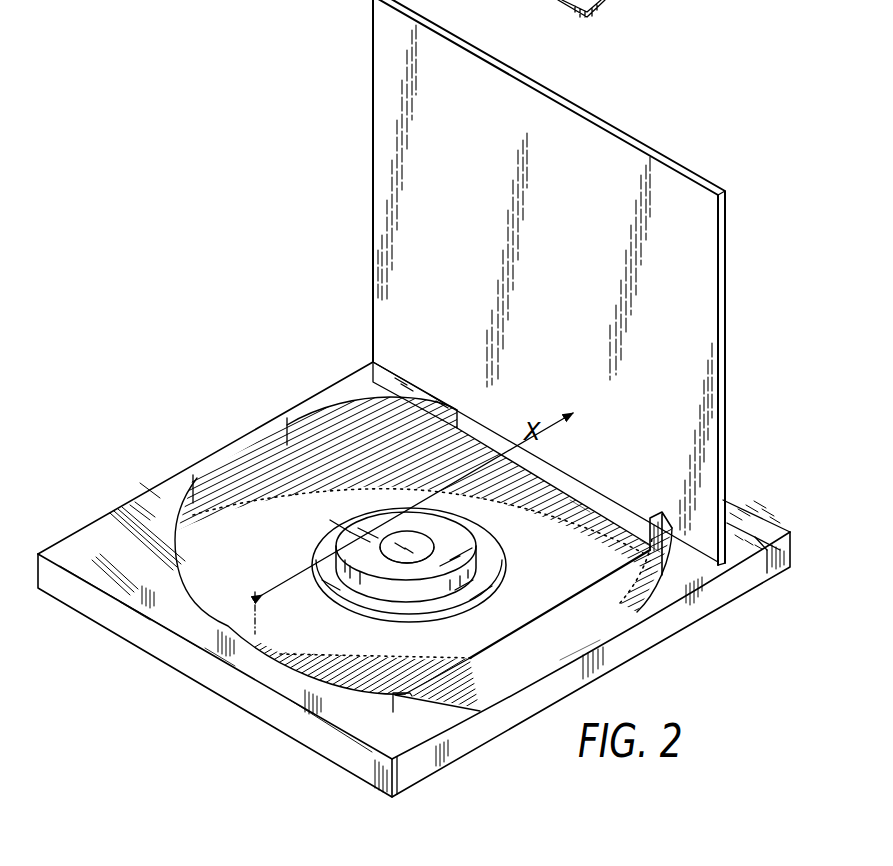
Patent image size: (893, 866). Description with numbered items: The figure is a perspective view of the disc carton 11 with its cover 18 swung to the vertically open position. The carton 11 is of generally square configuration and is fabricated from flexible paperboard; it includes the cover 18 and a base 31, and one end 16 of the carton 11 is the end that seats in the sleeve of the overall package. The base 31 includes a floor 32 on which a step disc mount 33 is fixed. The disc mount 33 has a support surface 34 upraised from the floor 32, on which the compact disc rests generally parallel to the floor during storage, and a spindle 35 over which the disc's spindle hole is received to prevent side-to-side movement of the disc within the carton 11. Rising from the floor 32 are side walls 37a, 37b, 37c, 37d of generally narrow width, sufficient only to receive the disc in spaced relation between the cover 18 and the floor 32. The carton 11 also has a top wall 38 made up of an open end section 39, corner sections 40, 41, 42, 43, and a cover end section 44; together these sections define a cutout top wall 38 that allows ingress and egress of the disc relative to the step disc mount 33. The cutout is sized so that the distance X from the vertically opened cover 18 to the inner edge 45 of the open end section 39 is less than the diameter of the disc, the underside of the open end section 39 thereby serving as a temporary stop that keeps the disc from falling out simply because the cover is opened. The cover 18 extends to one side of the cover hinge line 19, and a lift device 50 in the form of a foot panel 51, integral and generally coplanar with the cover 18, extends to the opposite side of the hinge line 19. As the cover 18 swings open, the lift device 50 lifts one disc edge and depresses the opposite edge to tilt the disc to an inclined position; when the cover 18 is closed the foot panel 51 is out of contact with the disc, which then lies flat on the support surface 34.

The disc carton 11 is at (178, 721).
The end of the disc carton 16 is at (130, 488).
The cover 18 is at (579, 269).
The cover hinge line 19 is at (728, 562).
The base 31 is at (143, 600).
The floor 32 is at (270, 566).
The step disc mount 33 is at (508, 543).
The support surface 34 is at (447, 532).
The spindle 35 is at (414, 544).
The side wall 37a is at (253, 698).
The side wall 37b is at (632, 647).
The side wall 37c is at (216, 449).
The side wall 37d is at (746, 487).
The top wall 38 is at (112, 540).
The open end section 39 is at (223, 647).
The corner section 40 is at (127, 507).
The corner section 41 is at (457, 713).
The corner section 42 is at (383, 390).
The corner section 43 is at (700, 594).
The cover end section 44 is at (753, 540).
The inner edge 45 is at (248, 631).
The lift device 50 is at (623, 497).
The foot panel 51 is at (577, 497).